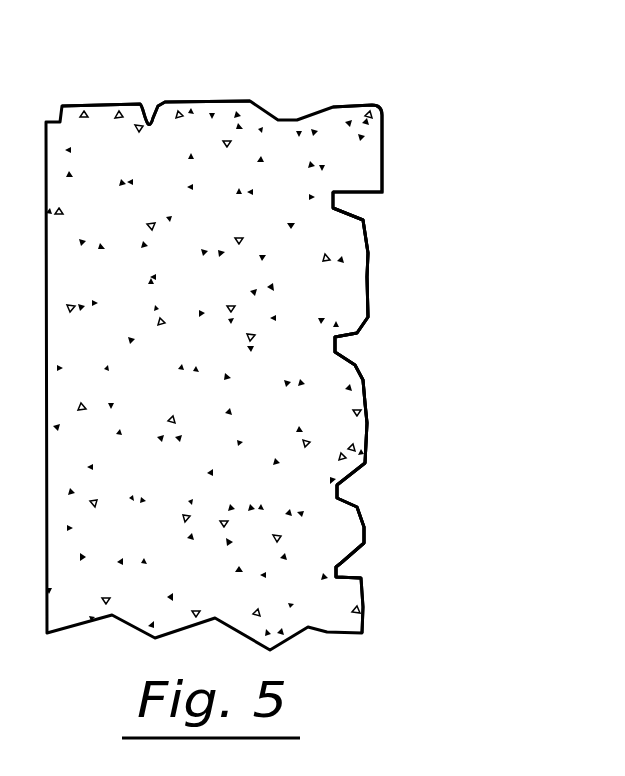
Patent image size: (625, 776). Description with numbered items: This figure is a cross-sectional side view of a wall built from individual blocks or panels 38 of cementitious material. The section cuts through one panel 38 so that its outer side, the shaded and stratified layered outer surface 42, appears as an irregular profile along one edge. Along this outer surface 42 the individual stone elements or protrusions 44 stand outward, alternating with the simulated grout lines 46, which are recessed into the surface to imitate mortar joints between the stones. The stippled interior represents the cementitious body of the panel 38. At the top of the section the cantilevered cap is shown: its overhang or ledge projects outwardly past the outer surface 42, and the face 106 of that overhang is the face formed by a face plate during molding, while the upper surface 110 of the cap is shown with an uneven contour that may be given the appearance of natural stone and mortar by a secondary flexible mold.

The block or panel 38 is at (438, 607).
The shaded and stratified layered outer surface 42 is at (421, 468).
The stone elements or protrusions 44 is at (437, 533).
The simulated grout lines 46 is at (381, 577).
The face of the overhang or ledge 106 is at (382, 172).
The upper surface of the cantilevered cap 110 is at (232, 101).